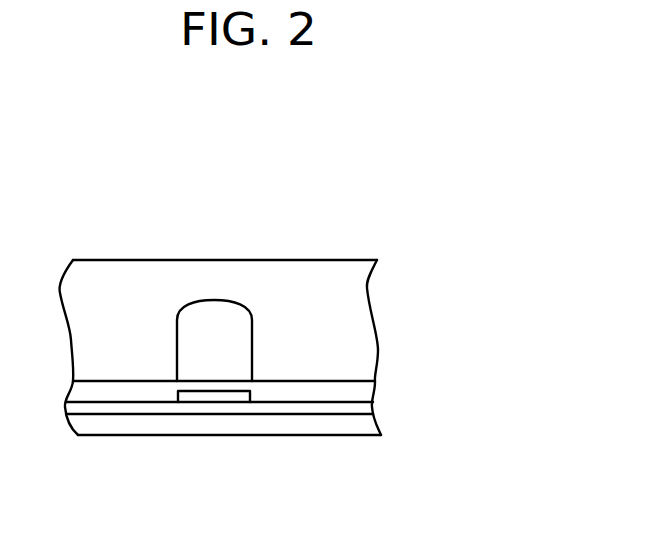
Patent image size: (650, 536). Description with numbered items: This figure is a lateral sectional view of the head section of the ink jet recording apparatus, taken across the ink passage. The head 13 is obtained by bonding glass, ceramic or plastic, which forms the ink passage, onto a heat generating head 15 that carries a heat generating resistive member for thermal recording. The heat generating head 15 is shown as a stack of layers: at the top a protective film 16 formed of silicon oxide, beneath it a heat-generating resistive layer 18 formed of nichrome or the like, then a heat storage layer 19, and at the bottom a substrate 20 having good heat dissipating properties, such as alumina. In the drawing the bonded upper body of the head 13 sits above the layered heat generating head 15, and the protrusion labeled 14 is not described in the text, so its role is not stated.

The head 13 is at (97, 260).
The protrusion 14 is at (220, 300).
The heat generating head 15 is at (405, 377).
The protective film 16 is at (262, 388).
The heat-generating resistive layer 18 is at (252, 398).
The heat storage layer 19 is at (262, 410).
The substrate 20 is at (322, 435).